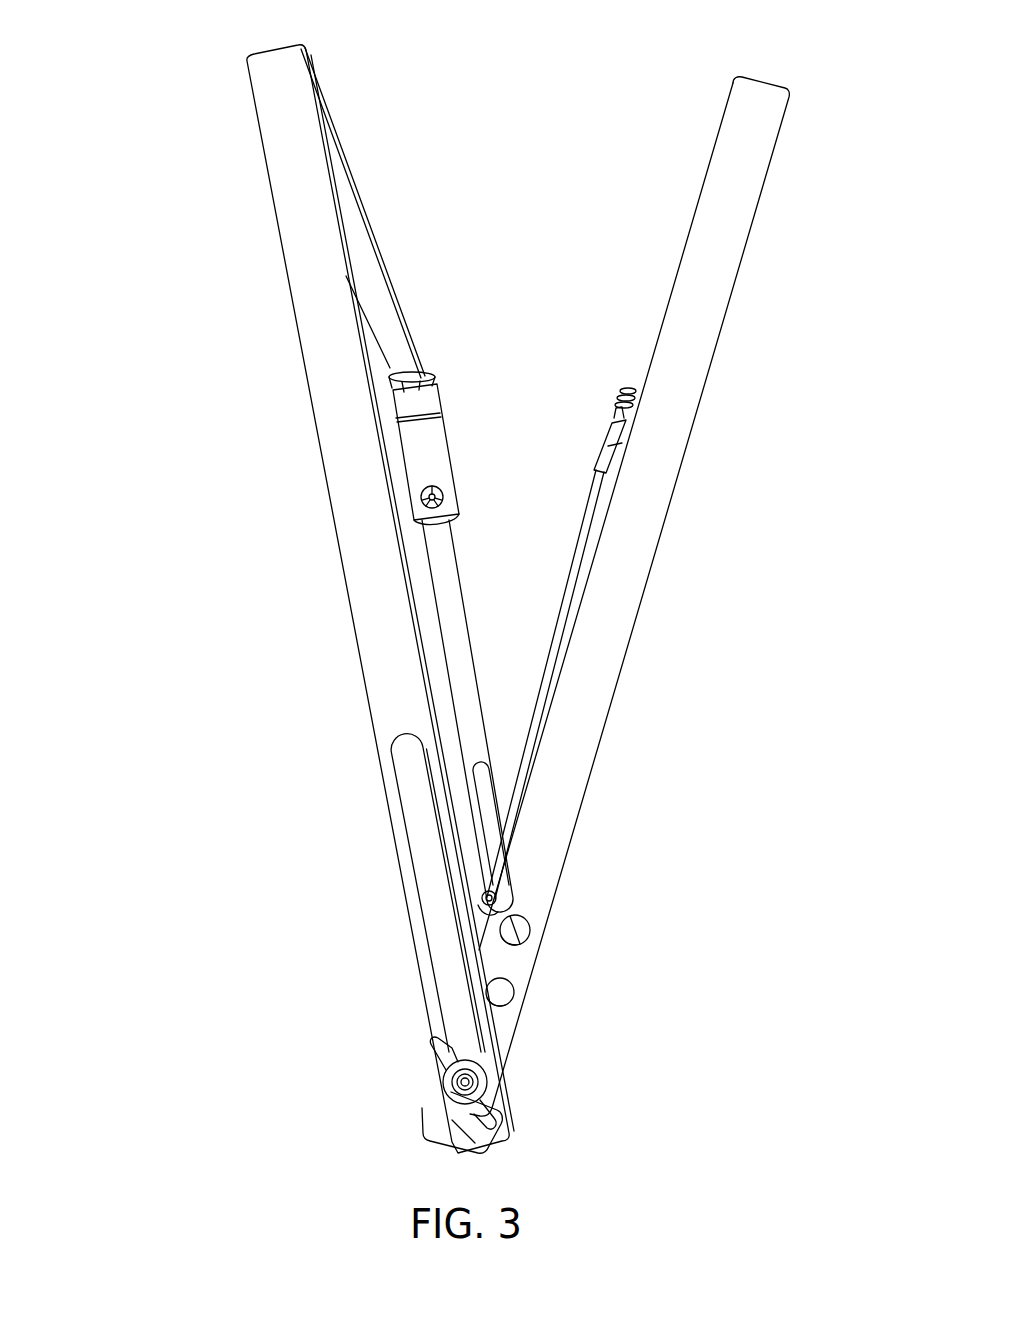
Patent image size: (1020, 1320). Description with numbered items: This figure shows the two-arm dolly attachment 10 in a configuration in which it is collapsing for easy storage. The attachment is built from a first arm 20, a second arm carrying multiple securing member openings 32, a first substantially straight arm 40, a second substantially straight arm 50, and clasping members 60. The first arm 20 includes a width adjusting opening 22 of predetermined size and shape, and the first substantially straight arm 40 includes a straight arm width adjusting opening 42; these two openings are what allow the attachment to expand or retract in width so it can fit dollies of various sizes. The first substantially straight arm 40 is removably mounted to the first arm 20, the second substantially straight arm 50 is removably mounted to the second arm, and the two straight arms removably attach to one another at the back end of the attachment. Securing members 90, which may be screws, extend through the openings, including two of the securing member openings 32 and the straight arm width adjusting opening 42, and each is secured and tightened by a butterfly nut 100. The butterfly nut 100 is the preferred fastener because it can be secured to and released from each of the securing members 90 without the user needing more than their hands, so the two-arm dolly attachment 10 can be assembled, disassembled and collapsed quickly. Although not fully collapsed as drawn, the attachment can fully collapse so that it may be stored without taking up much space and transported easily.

The two-arm dolly attachment 10 is at (186, 60).
The first arm 20 is at (368, 652).
The width adjusting opening 22 is at (405, 790).
The securing member openings 32 is at (530, 930).
The first substantially straight arm 40 is at (455, 592).
The straight arm width adjusting opening 42 is at (483, 790).
The second substantially straight arm 50 is at (590, 547).
The clasping members 60 is at (445, 455).
The securing members 90 is at (450, 1090).
The butterfly nut 100 is at (520, 1128).